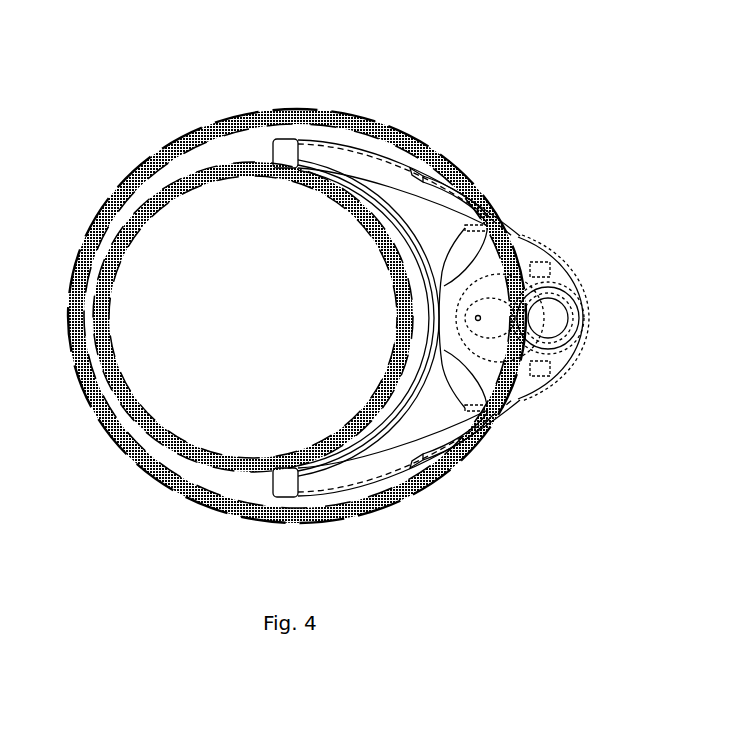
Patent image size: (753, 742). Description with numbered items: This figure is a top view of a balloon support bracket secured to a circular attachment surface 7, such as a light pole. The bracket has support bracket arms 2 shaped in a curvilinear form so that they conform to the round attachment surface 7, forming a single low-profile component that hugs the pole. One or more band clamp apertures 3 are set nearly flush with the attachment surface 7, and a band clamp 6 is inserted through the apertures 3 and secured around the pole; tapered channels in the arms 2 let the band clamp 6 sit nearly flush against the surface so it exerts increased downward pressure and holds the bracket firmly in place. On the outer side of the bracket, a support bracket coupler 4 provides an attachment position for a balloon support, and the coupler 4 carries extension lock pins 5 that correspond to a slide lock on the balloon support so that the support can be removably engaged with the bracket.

The support bracket arm 2 is at (318, 140).
The band clamp aperture 3 is at (508, 236).
The support bracket coupler 4 is at (578, 318).
The extension lock pin 5 is at (545, 266).
The band clamp 6 is at (410, 495).
The attachment surface 7 is at (135, 407).